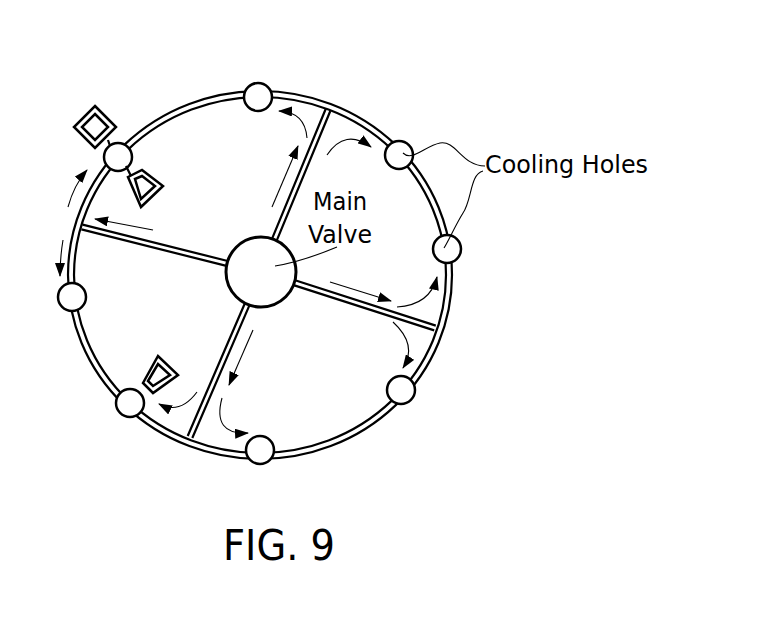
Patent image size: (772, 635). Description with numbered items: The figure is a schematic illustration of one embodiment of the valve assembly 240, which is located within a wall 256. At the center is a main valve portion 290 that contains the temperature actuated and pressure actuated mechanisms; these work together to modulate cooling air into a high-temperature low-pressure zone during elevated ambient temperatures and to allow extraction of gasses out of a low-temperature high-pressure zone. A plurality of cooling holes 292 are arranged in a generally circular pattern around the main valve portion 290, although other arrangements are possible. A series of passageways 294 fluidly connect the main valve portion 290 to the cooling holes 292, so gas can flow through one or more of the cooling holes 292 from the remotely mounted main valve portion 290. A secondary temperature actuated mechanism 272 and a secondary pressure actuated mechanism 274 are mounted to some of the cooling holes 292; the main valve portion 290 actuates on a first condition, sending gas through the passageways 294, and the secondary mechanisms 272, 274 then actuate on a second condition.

The valve assembly 240 is at (506, 70).
The wall 256 is at (571, 317).
The secondary temperature actuated mechanism 272 is at (88, 116).
The secondary pressure actuated mechanism 274 is at (158, 208).
The main valve portion 290 is at (275, 307).
The cooling holes 292 is at (277, 81).
The passageways 294 is at (188, 245).